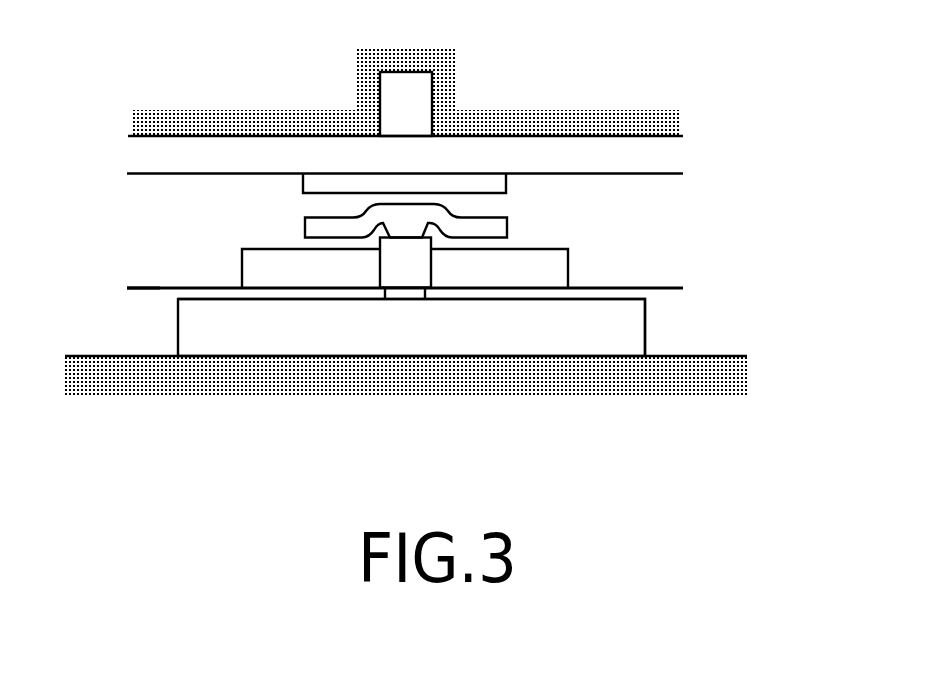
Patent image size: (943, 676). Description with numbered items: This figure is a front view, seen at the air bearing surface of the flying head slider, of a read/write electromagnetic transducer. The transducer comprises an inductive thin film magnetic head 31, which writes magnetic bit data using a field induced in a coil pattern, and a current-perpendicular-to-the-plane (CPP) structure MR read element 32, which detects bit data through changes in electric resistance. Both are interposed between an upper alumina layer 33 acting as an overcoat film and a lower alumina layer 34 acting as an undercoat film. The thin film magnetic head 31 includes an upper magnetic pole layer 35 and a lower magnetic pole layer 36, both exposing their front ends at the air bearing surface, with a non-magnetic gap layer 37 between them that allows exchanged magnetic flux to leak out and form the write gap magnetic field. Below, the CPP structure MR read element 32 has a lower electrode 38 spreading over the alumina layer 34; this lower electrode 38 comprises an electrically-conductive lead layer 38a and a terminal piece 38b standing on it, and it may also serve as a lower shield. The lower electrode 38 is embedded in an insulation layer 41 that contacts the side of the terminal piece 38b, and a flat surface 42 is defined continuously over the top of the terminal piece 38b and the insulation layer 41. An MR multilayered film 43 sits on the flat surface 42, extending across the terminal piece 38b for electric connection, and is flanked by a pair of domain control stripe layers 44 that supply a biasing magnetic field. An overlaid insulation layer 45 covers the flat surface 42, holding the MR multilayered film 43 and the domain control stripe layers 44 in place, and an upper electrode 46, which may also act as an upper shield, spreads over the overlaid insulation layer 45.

The thin film magnetic head 31 is at (515, 83).
The CPP structure MR read element 32 is at (481, 357).
The alumina layer 33 is at (157, 136).
The alumina layer 34 is at (715, 357).
The upper magnetic pole layer 35 is at (387, 92).
The lower magnetic pole layer 36 is at (302, 186).
The non-magnetic gap layer 37 is at (650, 136).
The lower electrode 38 is at (411, 405).
The lead layer 38a is at (285, 348).
The terminal piece 38b is at (407, 299).
The insulation layer 41 is at (638, 290).
The flat surface 42 is at (159, 286).
The MR multilayered film 43 is at (381, 262).
The domain control stripe layers 44 is at (243, 276).
The overlaid insulation layer 45 is at (647, 176).
The upper electrode 46 is at (505, 224).